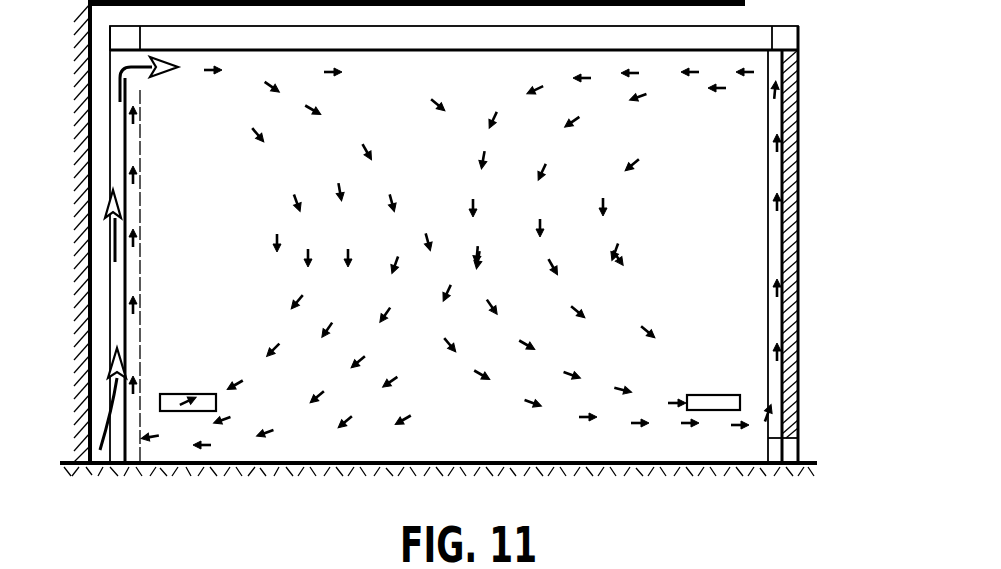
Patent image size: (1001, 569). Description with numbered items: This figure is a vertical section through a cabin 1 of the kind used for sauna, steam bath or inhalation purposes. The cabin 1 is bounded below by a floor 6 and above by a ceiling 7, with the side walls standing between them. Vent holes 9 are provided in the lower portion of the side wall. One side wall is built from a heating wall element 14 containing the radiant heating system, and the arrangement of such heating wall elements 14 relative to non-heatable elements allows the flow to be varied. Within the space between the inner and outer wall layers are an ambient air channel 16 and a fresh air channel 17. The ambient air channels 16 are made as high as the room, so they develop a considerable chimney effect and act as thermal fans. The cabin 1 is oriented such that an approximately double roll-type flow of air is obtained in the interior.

The cabin 1 is at (799, 251).
The floor 6 is at (447, 463).
The ceiling 7 is at (720, 35).
The vent holes 9 is at (173, 394).
The heating wall elements 14 is at (795, 145).
The ambient air channel 16 is at (128, 150).
The fresh air channel 17 is at (118, 287).